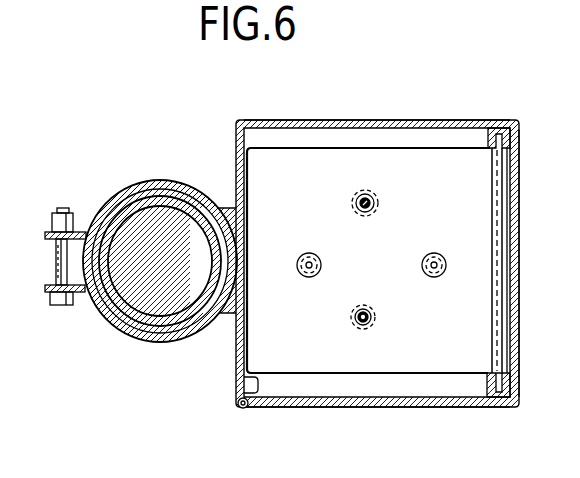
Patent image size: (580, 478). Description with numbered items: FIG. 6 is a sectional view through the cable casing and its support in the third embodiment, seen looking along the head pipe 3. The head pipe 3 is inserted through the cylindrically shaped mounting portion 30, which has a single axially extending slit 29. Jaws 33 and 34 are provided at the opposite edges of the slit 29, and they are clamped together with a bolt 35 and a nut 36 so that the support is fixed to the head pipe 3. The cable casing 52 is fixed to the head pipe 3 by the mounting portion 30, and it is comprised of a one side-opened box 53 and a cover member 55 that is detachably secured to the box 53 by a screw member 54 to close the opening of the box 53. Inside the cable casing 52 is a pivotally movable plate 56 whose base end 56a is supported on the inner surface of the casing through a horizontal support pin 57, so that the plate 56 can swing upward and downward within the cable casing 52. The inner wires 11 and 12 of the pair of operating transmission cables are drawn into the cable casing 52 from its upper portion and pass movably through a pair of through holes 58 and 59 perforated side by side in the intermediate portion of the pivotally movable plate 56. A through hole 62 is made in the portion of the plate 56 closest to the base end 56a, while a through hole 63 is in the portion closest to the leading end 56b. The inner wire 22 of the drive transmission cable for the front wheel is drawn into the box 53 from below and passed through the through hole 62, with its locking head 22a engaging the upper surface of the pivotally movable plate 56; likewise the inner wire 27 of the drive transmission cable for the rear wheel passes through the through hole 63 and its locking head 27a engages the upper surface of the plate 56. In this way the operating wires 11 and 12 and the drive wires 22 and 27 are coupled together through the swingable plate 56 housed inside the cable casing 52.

The head pipe 3 is at (150, 318).
The inner wire 11 is at (363, 330).
The inner wire 12 is at (363, 217).
The inner wire 22 is at (437, 278).
The locking head 22a is at (422, 272).
The inner wire 27 is at (312, 252).
The locking head 27a is at (309, 278).
The slit 29 is at (53, 285).
The mounting portion 30 is at (156, 180).
The jaw 33 is at (80, 305).
The jaw 34 is at (50, 232).
The bolt 35 is at (60, 265).
The nut 36 is at (70, 212).
The cable casing 52 is at (438, 114).
The box 53 is at (325, 120).
The screw member 54 is at (243, 410).
The cover member 55 is at (344, 400).
The pivotally movable plate 56 is at (413, 365).
The base end 56a is at (508, 202).
The leading end 56b is at (236, 343).
The horizontal support pin 57 is at (500, 237).
The through hole 58 is at (377, 201).
The through hole 59 is at (355, 326).
The through hole 62 is at (439, 254).
The through hole 63 is at (297, 266).